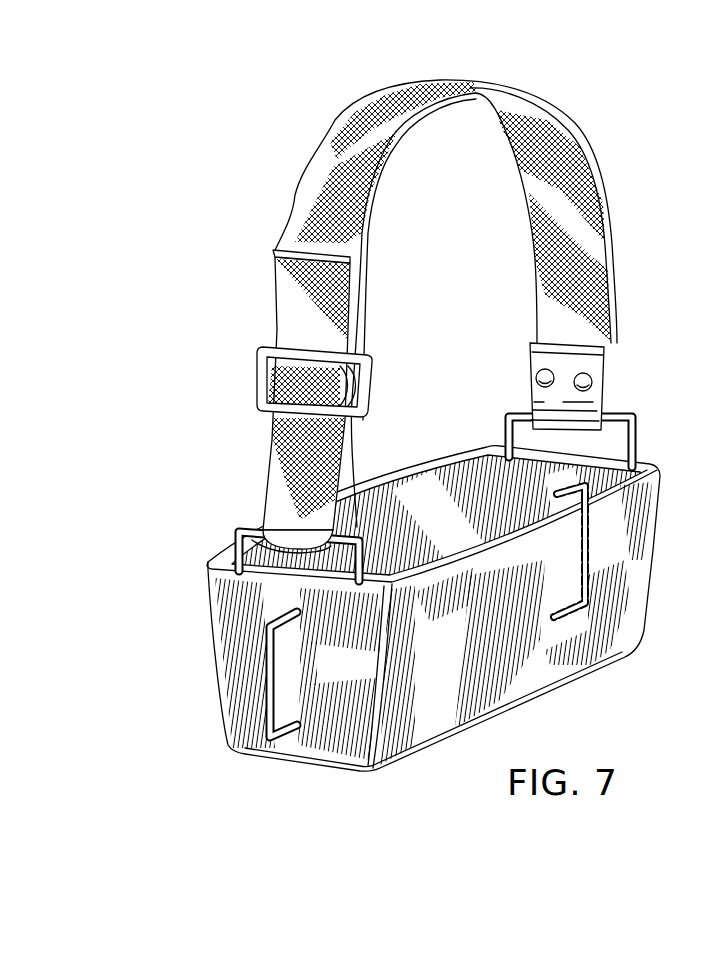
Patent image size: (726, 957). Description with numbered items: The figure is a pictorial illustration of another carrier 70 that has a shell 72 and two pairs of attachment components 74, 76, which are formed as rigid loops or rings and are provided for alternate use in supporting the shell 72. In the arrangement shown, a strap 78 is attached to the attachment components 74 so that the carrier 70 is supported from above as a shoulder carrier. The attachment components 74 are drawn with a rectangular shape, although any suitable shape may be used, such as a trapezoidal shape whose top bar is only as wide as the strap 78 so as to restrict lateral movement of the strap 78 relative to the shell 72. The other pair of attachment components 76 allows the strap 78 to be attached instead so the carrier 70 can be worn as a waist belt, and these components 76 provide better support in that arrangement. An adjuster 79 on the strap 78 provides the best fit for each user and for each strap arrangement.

The carrier 70 is at (229, 450).
The shell 72 is at (537, 667).
The attachment components 74 is at (240, 528).
The attachment components 76 is at (268, 676).
The strap 78 is at (325, 162).
The adjuster 79 is at (366, 390).